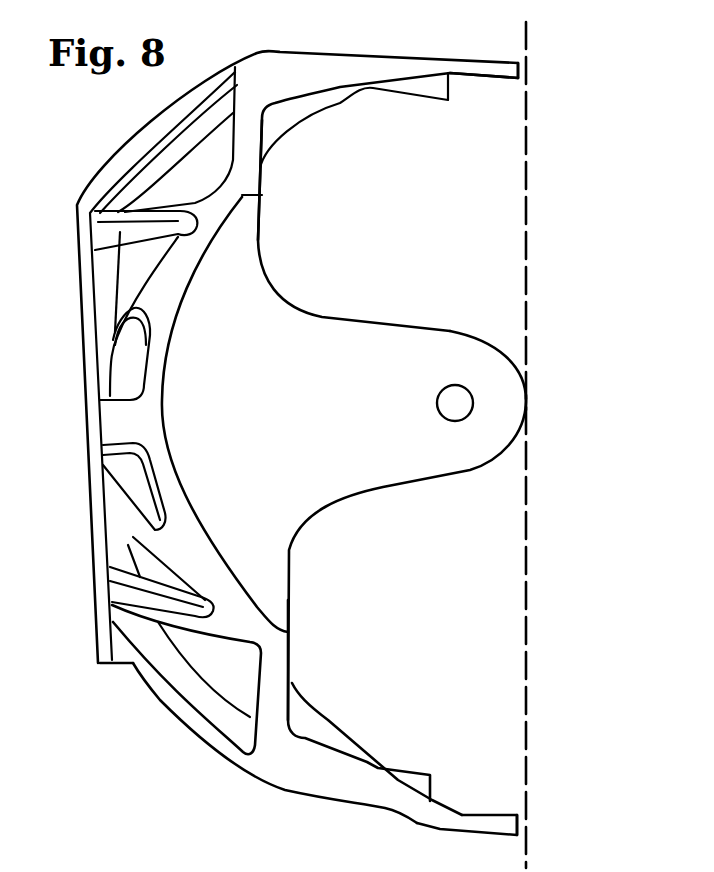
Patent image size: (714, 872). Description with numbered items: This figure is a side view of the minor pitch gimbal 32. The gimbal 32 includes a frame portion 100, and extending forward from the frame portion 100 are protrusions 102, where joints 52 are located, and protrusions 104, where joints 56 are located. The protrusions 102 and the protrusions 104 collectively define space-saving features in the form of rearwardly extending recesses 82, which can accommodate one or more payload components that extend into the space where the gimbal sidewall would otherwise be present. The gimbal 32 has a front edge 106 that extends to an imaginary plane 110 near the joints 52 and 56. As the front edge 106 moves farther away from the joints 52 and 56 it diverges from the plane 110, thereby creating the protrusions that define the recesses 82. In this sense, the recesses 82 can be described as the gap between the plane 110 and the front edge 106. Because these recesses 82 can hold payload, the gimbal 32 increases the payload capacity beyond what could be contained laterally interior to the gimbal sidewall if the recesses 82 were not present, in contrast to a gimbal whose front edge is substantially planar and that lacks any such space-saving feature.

The minor pitch gimbal 32 is at (325, 440).
The joints 52 is at (482, 811).
The joints 56 is at (455, 380).
The recesses 82 is at (441, 136).
The frame portion 100 is at (225, 667).
The protrusions 102 is at (386, 789).
The protrusions 104 is at (375, 453).
The front edge 106 is at (520, 70).
The imaginary plane 110 is at (522, 40).